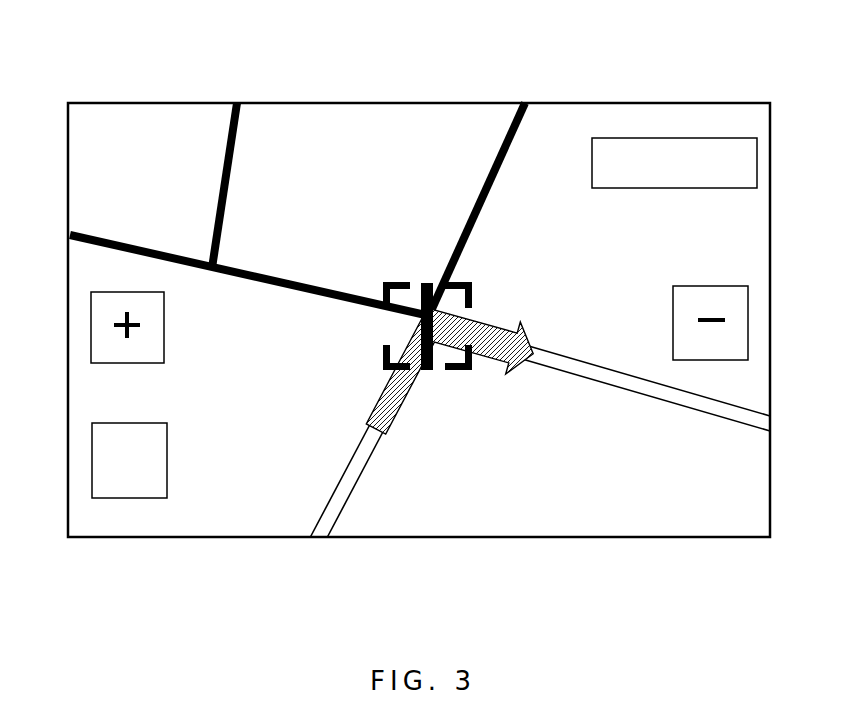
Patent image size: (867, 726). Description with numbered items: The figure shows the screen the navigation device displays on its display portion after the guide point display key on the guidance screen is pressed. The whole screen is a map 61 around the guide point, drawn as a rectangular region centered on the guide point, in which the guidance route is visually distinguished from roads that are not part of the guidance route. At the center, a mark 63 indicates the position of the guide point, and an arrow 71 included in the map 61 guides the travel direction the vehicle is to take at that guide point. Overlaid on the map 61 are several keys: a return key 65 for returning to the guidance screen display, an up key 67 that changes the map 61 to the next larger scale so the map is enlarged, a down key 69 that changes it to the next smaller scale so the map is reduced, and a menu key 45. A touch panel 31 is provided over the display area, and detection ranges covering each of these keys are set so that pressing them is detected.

The touch panel 31 is at (597, 487).
The menu key 45 is at (130, 498).
The map 61 is at (143, 129).
The mark 63 is at (478, 296).
The return key 65 is at (722, 138).
The up key 67 is at (90, 308).
The down key 69 is at (750, 315).
The arrow 71 is at (395, 418).